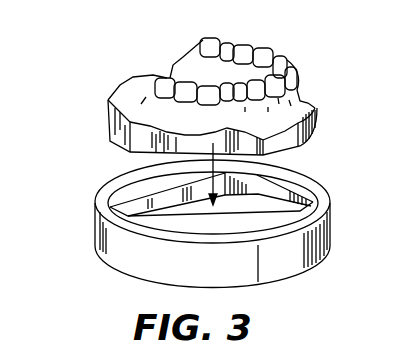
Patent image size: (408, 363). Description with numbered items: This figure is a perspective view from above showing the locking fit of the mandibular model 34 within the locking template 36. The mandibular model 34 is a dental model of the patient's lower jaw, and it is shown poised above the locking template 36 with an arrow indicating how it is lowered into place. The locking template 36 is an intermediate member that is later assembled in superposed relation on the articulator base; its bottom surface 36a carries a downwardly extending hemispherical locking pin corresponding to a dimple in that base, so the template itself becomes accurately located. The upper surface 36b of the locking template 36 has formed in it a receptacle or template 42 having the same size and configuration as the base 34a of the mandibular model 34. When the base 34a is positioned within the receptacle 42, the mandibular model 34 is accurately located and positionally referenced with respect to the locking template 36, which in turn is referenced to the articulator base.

The mandibular model 34 is at (316, 131).
The base of the mandibular model 34a is at (302, 146).
The locking template 36 is at (96, 232).
The bottom surface of the locking template 36a is at (302, 277).
The upper surface of the locking template 36b is at (308, 192).
The receptacle 42 is at (250, 220).